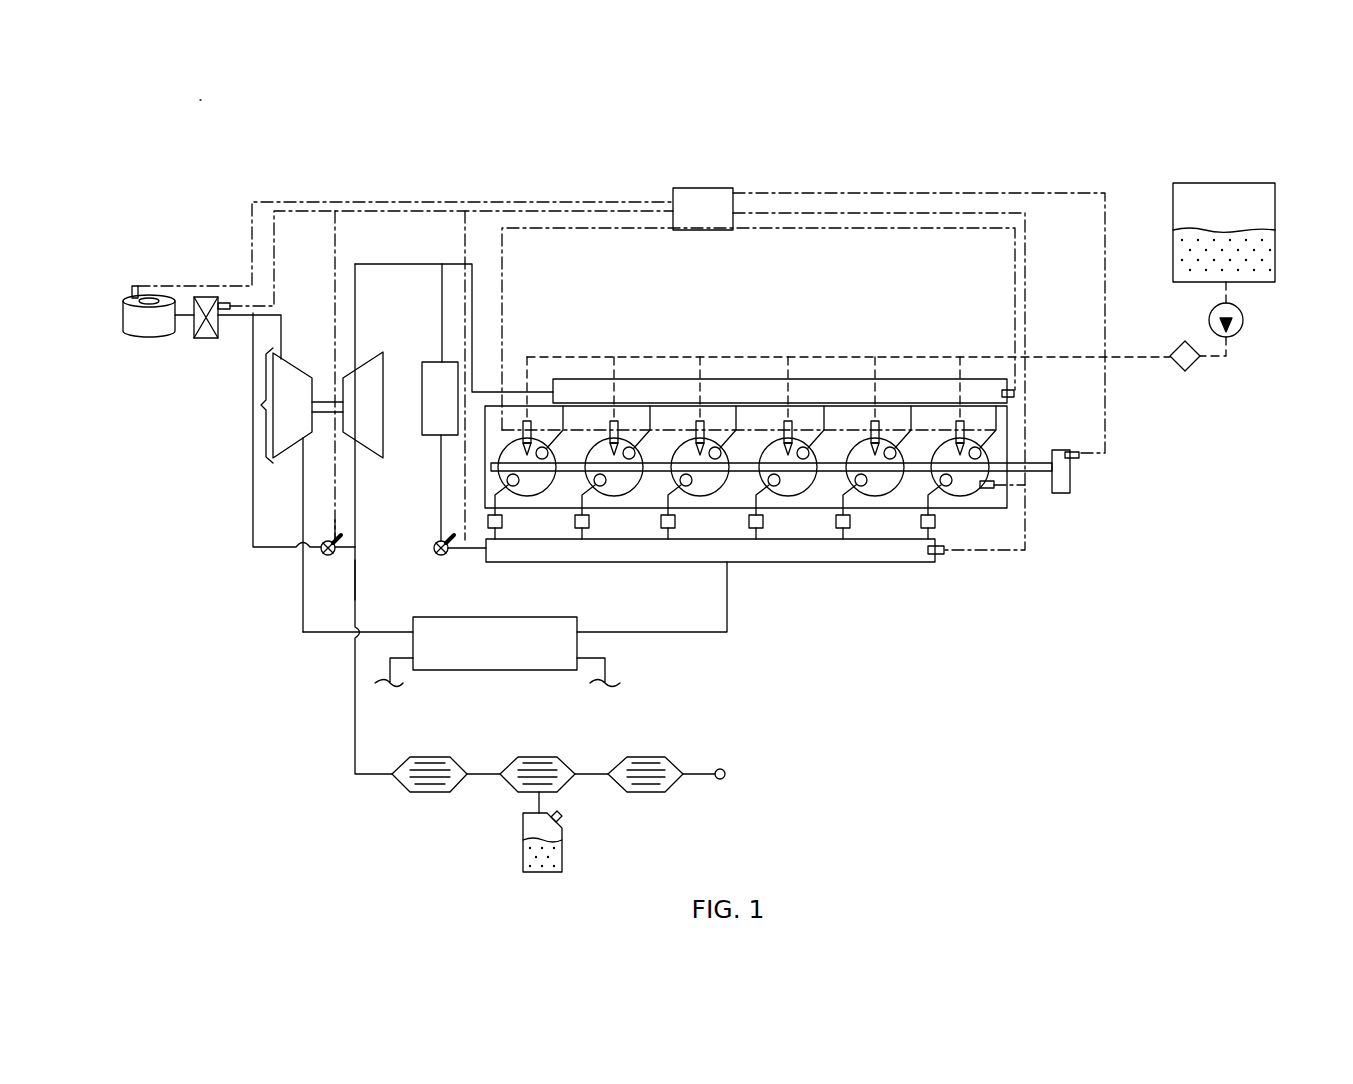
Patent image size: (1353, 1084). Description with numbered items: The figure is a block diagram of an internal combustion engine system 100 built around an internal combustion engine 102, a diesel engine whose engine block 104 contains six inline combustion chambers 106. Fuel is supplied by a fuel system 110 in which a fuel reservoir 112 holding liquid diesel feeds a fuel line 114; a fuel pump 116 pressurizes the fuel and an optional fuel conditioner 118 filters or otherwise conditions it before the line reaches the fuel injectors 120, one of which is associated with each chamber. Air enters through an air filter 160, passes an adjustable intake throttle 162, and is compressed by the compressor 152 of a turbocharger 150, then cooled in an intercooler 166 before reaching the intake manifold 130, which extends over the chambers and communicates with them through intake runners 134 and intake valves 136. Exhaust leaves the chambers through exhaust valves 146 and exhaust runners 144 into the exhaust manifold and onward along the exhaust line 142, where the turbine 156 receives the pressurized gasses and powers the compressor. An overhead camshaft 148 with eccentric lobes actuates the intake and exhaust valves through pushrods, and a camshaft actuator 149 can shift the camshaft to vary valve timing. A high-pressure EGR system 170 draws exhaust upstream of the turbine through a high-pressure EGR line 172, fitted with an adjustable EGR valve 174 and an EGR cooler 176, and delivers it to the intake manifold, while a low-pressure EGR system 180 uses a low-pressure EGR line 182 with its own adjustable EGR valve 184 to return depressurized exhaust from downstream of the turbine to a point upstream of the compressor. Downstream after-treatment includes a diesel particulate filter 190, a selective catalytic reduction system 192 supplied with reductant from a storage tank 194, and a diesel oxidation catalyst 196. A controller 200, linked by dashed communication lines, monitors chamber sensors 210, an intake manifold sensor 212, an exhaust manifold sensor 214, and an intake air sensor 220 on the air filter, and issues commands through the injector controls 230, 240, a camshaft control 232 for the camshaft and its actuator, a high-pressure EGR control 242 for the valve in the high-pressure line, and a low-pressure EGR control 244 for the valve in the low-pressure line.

The internal combustion engine system 100 is at (270, 165).
The internal combustion engine 102 is at (610, 325).
The engine block 104 is at (1010, 510).
The combustion chambers 106 is at (808, 488).
The fuel system 110 is at (1297, 343).
The fuel reservoir 112 is at (1252, 207).
The fuel line 114 is at (1140, 356).
The fuel pump 116 is at (1244, 322).
The fuel conditioner 118 is at (1192, 369).
The fuel injectors 120 is at (786, 426).
The intake manifold 130 is at (880, 563).
The intake runners 134 is at (767, 498).
The intake valves 136 is at (790, 492).
The exhaust line 142 is at (510, 382).
The exhaust runners 144 is at (828, 408).
The exhaust valves 146 is at (818, 440).
The overhead camshaft 148 is at (1030, 472).
The camshaft actuator 149 is at (1068, 490).
The turbocharger 150 is at (266, 403).
The compressor 152 is at (297, 368).
The turbine 156 is at (384, 438).
The air filter 160 is at (123, 322).
The intake throttle 162 is at (206, 340).
The intercooler 166 is at (500, 670).
The high-pressure EGR system 170 is at (386, 352).
The high-pressure EGR line 172 is at (438, 292).
The adjustable EGR valve 174 is at (441, 558).
The EGR cooler 176 is at (422, 392).
The low-pressure EGR system 180 is at (390, 523).
The low-pressure EGR line 182 is at (263, 546).
The adjustable EGR valve 184 is at (322, 553).
The diesel particulate filter 190 is at (420, 794).
The selective catalytic reduction system 192 is at (539, 757).
The storage tank 194 is at (522, 846).
The diesel oxidation catalyst 196 is at (650, 794).
The controller 200 is at (680, 188).
The chamber sensors 210 is at (987, 490).
The intake manifold sensor 212 is at (936, 556).
The exhaust manifold sensor 214 is at (1014, 394).
The intake air sensor 220 is at (134, 286).
The injector controls 230 is at (789, 420).
The camshaft control 232 is at (1080, 455).
The injector controls 240 is at (226, 303).
The high-pressure EGR control 242 is at (450, 552).
The low-pressure EGR control 244 is at (337, 540).